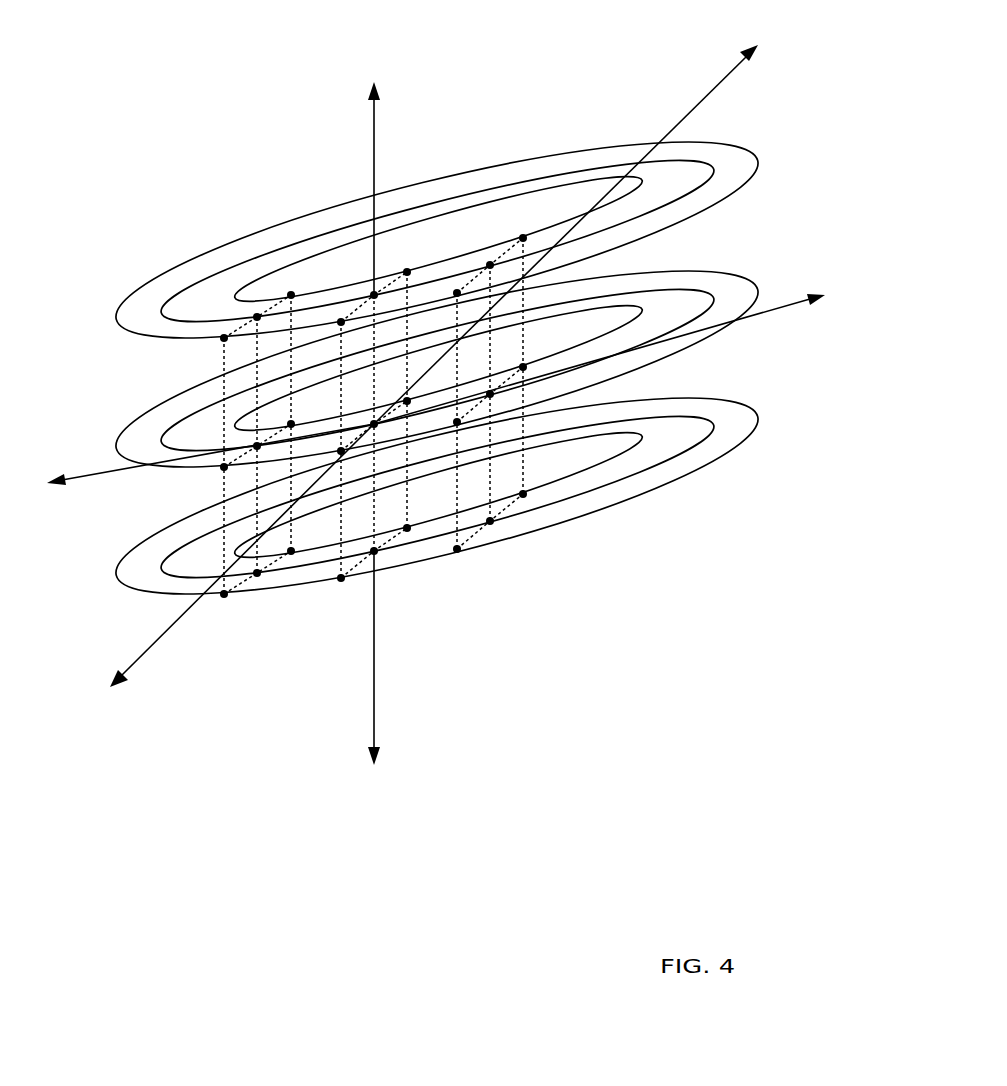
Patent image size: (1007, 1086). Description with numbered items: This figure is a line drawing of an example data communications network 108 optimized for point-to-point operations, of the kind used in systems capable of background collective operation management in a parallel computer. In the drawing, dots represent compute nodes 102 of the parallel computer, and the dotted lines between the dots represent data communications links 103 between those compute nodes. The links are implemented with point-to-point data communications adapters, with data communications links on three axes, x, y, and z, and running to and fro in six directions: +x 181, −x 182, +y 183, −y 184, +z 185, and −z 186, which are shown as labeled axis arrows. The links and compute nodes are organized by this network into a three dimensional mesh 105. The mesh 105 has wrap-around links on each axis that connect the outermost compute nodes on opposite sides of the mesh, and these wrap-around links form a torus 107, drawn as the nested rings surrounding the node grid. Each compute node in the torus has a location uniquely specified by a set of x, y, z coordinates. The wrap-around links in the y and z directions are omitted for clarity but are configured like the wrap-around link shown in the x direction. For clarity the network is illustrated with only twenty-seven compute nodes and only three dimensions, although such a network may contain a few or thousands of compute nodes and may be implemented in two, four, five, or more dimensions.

The compute nodes 102 is at (523, 493).
The data communications links 103 is at (225, 497).
The three dimensional mesh 105 is at (405, 445).
The torus 107 is at (205, 242).
The data communications network 108 is at (427, 549).
The +x direction 181 is at (860, 326).
The −x direction 182 is at (42, 525).
The +y direction 183 is at (802, 73).
The −y direction 184 is at (105, 736).
The +z direction 185 is at (390, 73).
The −z direction 186 is at (393, 826).